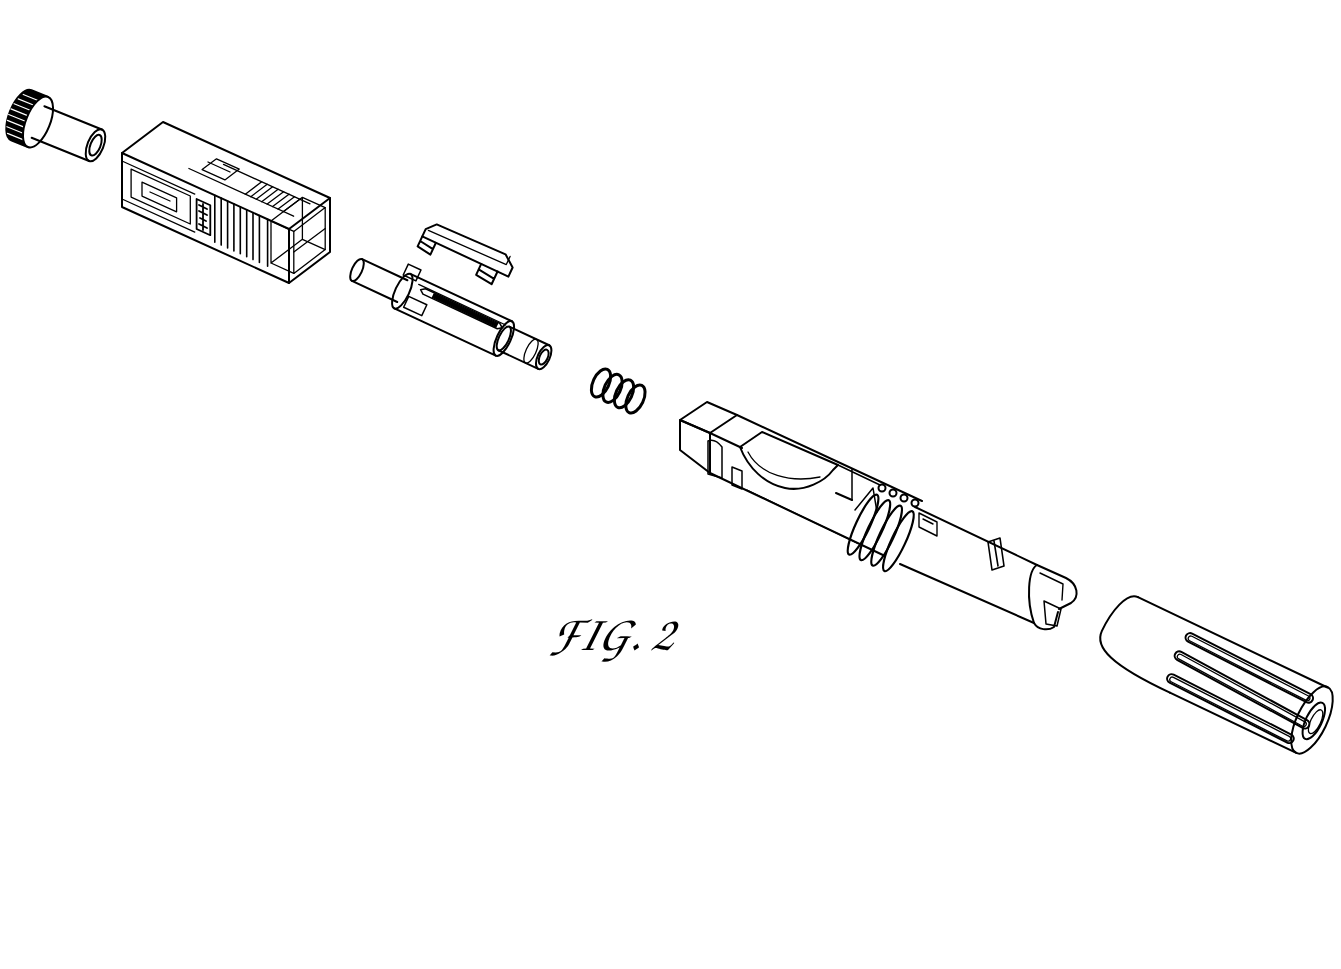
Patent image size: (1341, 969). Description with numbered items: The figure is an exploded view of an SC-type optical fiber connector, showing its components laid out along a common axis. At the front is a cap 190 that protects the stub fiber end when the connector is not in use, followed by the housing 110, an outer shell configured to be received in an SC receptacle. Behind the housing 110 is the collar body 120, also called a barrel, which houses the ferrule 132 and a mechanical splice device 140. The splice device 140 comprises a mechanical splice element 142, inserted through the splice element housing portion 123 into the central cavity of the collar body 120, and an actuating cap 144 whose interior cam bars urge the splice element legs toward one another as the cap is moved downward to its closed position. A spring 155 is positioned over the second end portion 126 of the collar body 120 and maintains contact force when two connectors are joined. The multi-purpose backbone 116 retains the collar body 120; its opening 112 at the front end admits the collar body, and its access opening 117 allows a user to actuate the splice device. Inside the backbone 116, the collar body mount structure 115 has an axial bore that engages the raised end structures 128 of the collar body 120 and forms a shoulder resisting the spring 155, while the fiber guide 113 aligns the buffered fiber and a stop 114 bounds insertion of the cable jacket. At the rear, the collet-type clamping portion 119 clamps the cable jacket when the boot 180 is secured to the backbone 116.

The housing 110 is at (182, 230).
The opening 112 is at (697, 417).
The fiber guide 113 is at (993, 545).
The stop 114 is at (992, 545).
The collar body mount structure 115 is at (851, 483).
The backbone 116 is at (885, 483).
The access opening 117 is at (796, 468).
The clamping portion 119 is at (1050, 571).
The collar body 120 is at (495, 340).
The splice element housing portion 123 is at (499, 313).
The second end portion 126 is at (519, 352).
The raised end structures 128 is at (546, 353).
The ferrule 132 is at (372, 284).
The mechanical splice device 140 is at (473, 230).
The mechanical splice element 142 is at (452, 300).
The actuating cap 144 is at (483, 250).
The spring 155 is at (604, 404).
The boot 180 is at (1172, 588).
The cap 190 is at (77, 126).